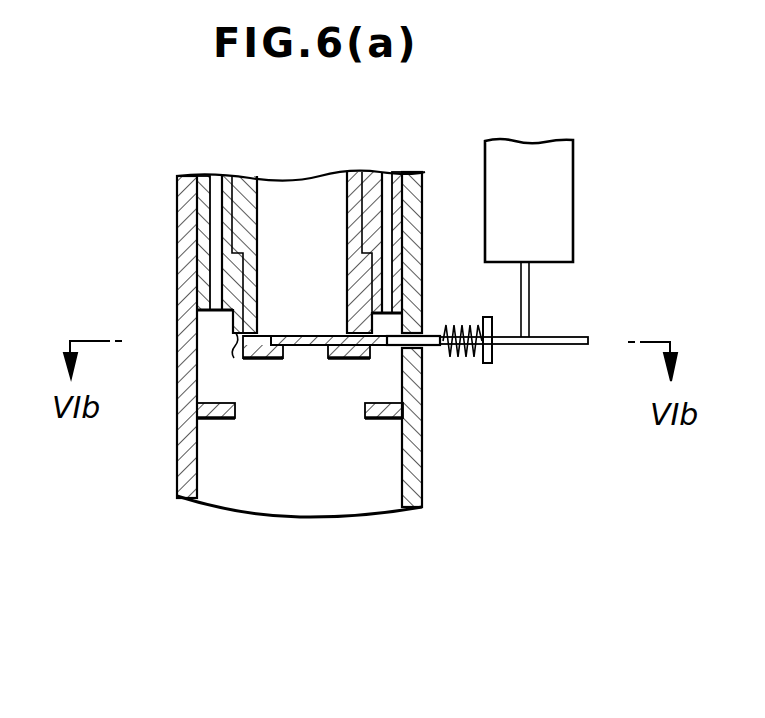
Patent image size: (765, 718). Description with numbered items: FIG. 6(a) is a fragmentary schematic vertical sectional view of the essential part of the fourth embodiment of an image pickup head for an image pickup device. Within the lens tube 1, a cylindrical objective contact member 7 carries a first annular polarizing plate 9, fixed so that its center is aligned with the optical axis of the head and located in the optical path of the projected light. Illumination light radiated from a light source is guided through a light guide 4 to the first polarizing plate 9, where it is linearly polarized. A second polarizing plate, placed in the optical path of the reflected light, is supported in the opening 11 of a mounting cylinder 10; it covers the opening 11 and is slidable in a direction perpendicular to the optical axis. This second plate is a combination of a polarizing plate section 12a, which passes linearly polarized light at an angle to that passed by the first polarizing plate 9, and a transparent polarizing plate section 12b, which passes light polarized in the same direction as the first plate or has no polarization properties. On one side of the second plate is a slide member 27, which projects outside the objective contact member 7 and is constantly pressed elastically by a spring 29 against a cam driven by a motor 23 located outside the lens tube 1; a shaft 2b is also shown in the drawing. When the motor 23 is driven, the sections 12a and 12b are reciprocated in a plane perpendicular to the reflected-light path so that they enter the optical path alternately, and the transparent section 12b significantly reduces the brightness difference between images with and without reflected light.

The lens tube 1 is at (178, 231).
The shaft 2b is at (590, 337).
The light guide 4 is at (212, 311).
The objective contact member 7 is at (423, 449).
The first annular polarizing plate 9 is at (222, 420).
The mounting cylinder 10 is at (224, 356).
The opening 11 is at (295, 362).
The polarizing plate section 12a is at (292, 335).
The transparent polarizing plate section 12b is at (373, 349).
The motor 23 is at (573, 227).
The slide member 27 is at (444, 334).
The spring 29 is at (466, 362).